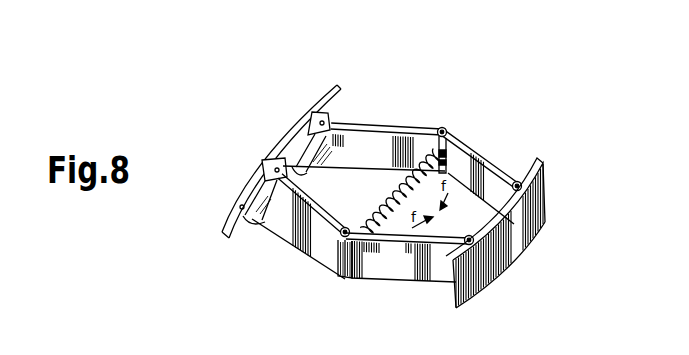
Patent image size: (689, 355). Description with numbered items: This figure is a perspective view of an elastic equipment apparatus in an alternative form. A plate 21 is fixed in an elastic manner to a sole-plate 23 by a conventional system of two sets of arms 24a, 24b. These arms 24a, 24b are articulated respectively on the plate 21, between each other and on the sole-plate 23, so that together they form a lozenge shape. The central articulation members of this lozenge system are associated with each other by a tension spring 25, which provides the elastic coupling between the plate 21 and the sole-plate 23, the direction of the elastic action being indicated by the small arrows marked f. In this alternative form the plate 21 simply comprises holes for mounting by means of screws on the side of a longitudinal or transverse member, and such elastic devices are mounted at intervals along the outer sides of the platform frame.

The plate 21 is at (287, 135).
The sole-plate 23 is at (518, 247).
The set of arms 24a is at (388, 131).
The set of arms 24b is at (483, 167).
The tension spring 25 is at (385, 196).